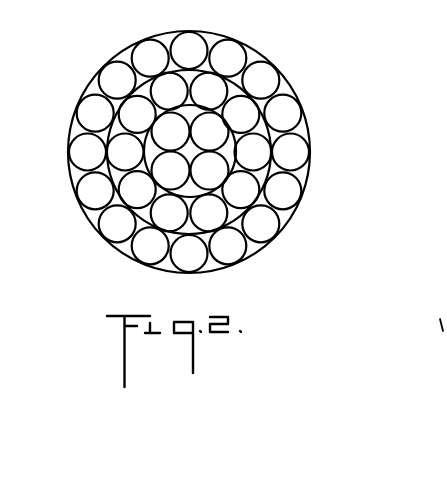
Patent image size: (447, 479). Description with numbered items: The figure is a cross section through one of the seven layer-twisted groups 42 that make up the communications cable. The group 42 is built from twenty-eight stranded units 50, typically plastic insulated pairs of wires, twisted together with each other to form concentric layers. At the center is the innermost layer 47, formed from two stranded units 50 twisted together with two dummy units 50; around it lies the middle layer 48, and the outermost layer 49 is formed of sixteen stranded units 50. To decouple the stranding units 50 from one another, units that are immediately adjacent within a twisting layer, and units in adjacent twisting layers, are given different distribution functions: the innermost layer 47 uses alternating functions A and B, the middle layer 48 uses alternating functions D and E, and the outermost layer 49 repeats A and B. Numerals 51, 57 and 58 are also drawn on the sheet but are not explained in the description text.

The layer-twisted group 42 is at (308, 28).
The innermost layer 47 is at (249, 164).
The middle layer 48 is at (247, 229).
The outermost layer 49 is at (254, 250).
The stranded unit 50 is at (207, 126).
The core strand 51 is at (167, 172).
The element (adjacent figure) 57 is at (146, 472).
The element (adjacent figure) 58 is at (83, 477).